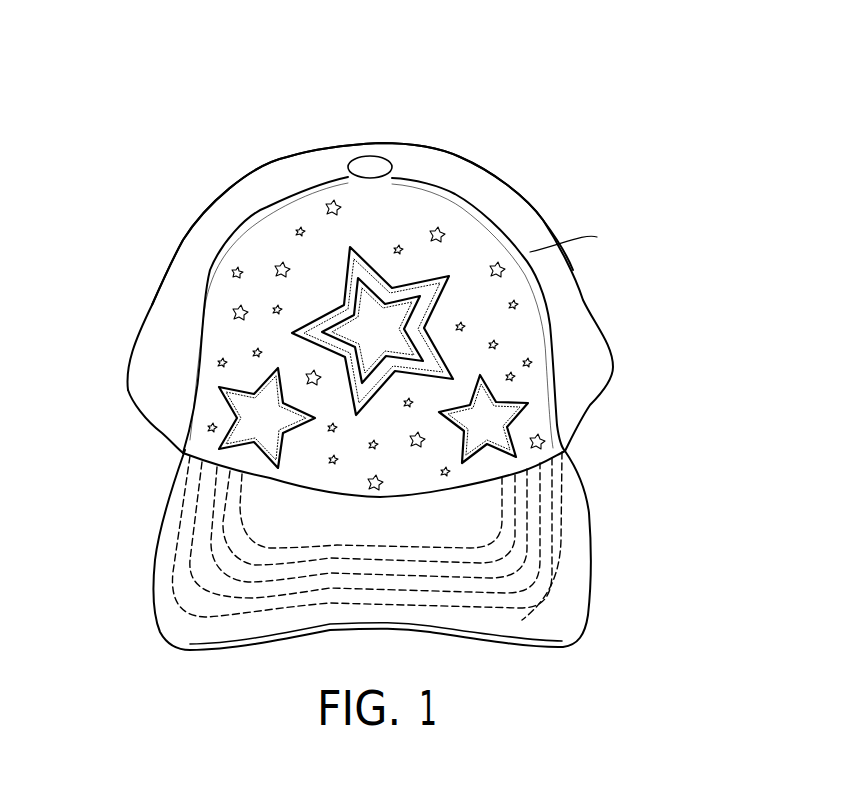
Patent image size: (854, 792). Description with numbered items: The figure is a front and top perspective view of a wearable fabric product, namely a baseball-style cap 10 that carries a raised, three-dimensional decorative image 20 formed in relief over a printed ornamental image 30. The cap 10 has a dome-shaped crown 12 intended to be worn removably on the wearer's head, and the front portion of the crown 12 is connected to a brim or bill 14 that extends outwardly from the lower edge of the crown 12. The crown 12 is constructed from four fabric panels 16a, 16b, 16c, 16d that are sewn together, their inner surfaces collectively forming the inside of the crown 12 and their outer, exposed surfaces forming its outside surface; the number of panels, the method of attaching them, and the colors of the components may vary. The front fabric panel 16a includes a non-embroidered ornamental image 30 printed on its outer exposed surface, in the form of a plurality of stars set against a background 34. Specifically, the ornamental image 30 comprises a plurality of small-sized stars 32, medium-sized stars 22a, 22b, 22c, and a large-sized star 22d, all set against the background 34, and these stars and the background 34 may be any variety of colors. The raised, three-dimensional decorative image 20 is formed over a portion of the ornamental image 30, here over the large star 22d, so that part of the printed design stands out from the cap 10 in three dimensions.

The cap 10 is at (168, 193).
The crown 12 is at (507, 202).
The brim 14 is at (530, 550).
The fabric panel 16a is at (423, 183).
The fabric panel 16b is at (283, 177).
The fabric panel 16c is at (373, 148).
The fabric panel 16d is at (467, 183).
The raised three-dimensional decorative image 20 is at (356, 249).
The medium-sized star 22a is at (395, 313).
The medium-sized star 22b is at (257, 410).
The medium-sized star 22c is at (487, 427).
The large-sized star 22d is at (355, 245).
The ornamental image 30 is at (528, 342).
The small-sized stars 32 is at (513, 303).
The background 34 is at (263, 247).